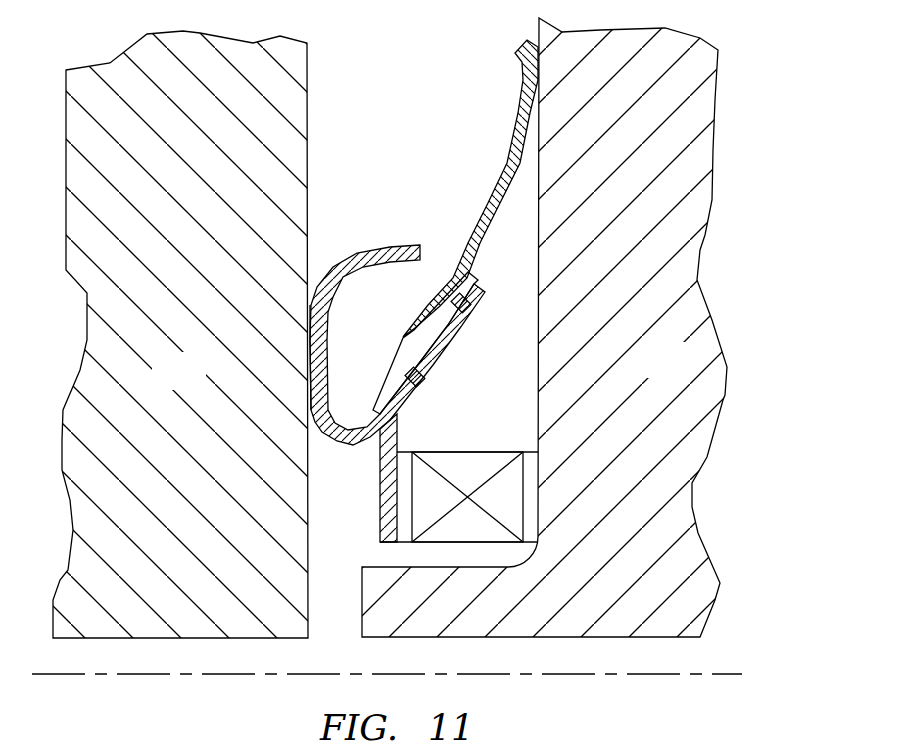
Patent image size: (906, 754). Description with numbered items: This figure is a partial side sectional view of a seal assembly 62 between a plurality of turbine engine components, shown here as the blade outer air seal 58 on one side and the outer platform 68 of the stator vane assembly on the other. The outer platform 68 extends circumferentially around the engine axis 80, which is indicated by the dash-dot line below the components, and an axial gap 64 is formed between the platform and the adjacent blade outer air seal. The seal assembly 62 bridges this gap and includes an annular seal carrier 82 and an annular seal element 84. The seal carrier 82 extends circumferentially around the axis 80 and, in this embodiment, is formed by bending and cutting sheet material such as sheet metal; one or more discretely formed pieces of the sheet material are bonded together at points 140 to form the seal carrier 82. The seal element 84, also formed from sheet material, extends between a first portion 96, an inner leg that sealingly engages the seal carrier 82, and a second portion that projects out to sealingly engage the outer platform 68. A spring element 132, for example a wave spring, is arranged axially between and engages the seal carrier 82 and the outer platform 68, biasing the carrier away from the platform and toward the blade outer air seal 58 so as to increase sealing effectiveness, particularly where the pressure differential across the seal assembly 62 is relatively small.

The blade outer air seal 58 is at (194, 387).
The outer platform 68 is at (677, 377).
The seal assembly 62 is at (411, 165).
The axial gap 64 is at (442, 88).
The axis 80 is at (733, 670).
The seal carrier 82 is at (347, 240).
The seal element 84 is at (500, 202).
The first portion 96 is at (309, 317).
The spring element 132 is at (527, 497).
The bonding points 140 is at (467, 312).